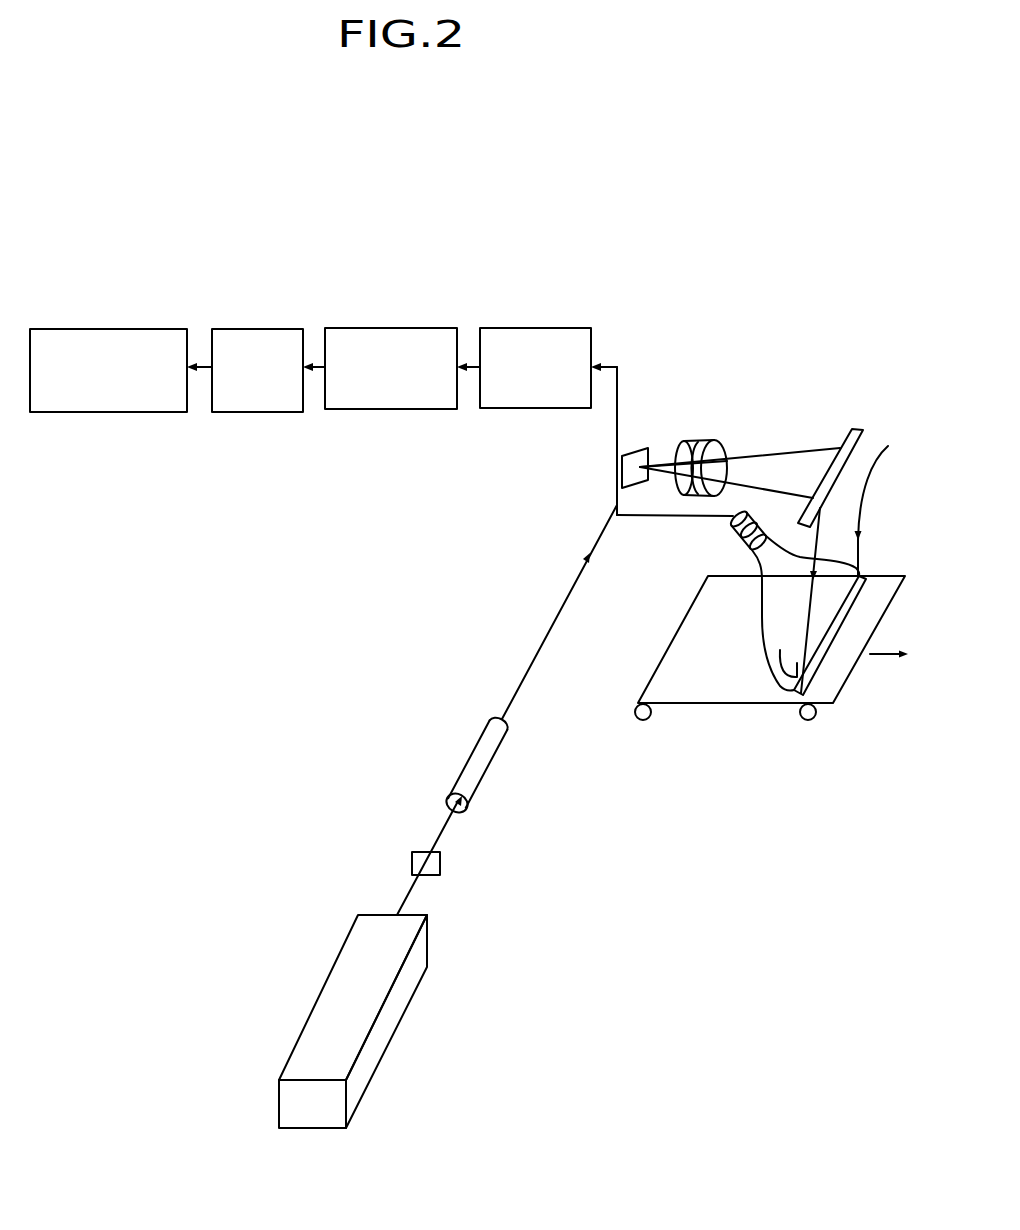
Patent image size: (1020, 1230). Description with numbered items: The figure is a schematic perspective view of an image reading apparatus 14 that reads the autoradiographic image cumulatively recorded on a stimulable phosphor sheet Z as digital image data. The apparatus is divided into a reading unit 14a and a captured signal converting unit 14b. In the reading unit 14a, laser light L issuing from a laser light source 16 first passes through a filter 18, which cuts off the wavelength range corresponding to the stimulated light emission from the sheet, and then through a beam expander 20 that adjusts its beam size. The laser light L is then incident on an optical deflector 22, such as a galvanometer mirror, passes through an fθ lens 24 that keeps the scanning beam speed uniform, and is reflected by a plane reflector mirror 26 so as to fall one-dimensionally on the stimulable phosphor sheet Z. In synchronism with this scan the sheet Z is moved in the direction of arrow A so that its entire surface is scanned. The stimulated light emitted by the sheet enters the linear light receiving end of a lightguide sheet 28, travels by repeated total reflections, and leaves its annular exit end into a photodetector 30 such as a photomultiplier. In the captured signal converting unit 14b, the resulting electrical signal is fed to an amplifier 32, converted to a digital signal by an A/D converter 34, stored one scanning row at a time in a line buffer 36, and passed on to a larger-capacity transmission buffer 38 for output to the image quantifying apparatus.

The image reading apparatus 14 is at (672, 260).
The reading unit 14a is at (455, 630).
The captured signal converting unit 14b is at (350, 427).
The laser light source 16 is at (360, 953).
The filter 18 is at (422, 852).
The beam expander 20 is at (474, 768).
The optical deflector 22 is at (638, 448).
The fθ lens 24 is at (690, 448).
The plane reflector mirror 26 is at (848, 442).
The lightguide sheet 28 is at (797, 692).
The photodetector 30 is at (733, 523).
The amplifier 32 is at (543, 328).
The A/D converter 34 is at (425, 328).
The line buffer 36 is at (293, 329).
The transmission buffer 38 is at (165, 329).
The laser light L is at (560, 614).
The stimulable phosphor sheet Z is at (717, 688).
The direction of arrow A is at (889, 666).